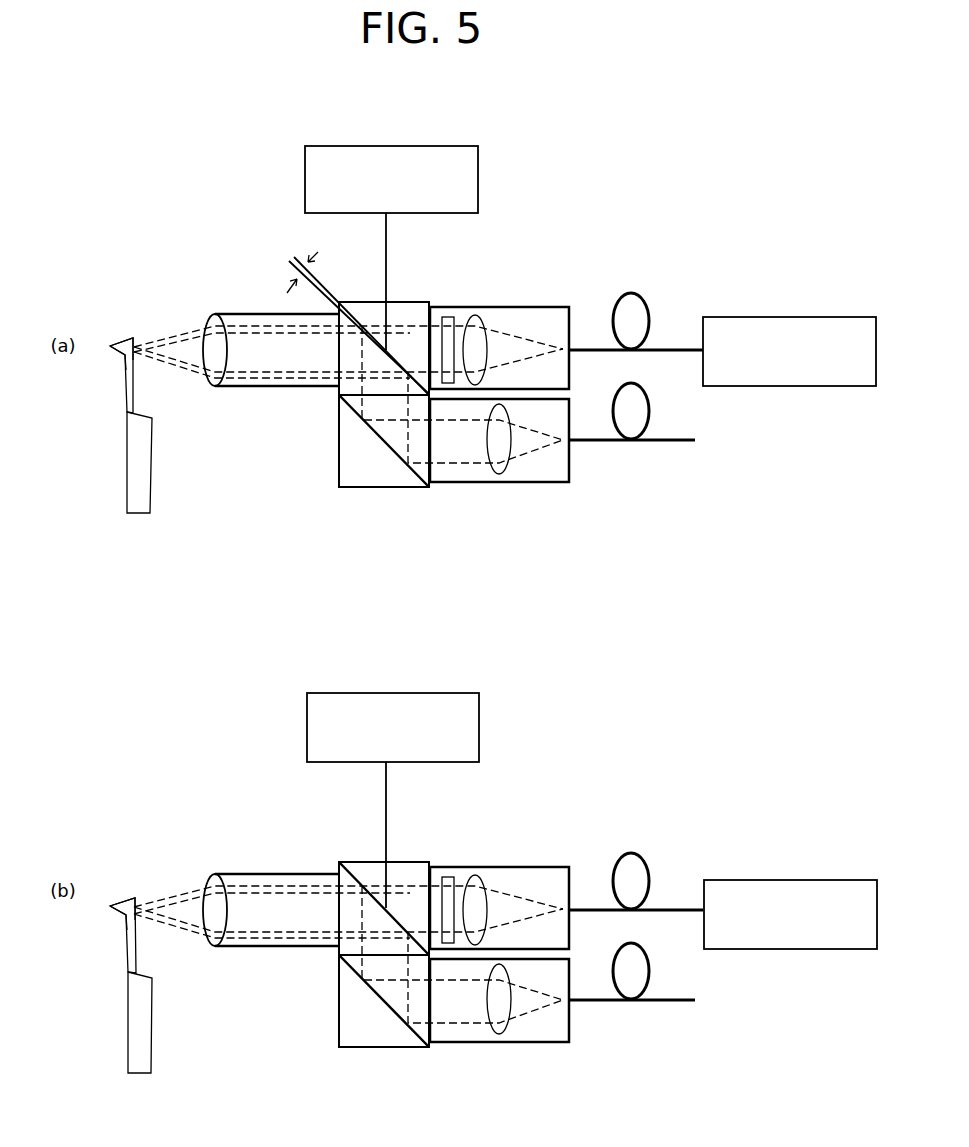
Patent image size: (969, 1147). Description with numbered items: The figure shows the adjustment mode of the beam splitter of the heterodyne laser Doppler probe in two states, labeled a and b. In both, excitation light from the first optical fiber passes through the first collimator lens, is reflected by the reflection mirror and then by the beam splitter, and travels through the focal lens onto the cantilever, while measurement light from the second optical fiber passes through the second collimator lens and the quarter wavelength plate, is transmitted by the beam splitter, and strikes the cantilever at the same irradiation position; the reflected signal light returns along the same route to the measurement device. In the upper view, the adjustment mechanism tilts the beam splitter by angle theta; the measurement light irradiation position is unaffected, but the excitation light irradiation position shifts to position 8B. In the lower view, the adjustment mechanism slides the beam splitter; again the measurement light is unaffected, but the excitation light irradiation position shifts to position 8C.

The shifted irradiation position of the excitation light 8B is at (135, 352).
The shifted irradiation position of the excitation light 8C is at (160, 950).